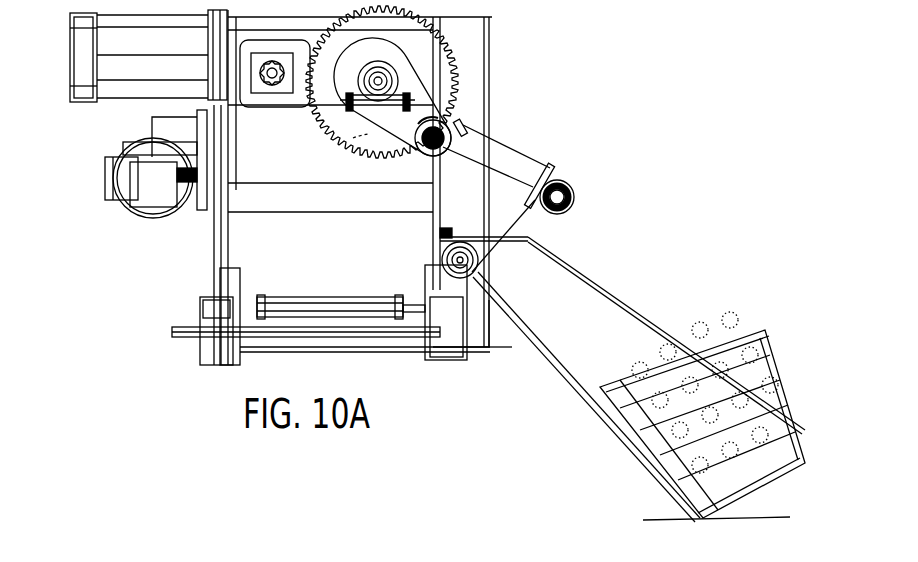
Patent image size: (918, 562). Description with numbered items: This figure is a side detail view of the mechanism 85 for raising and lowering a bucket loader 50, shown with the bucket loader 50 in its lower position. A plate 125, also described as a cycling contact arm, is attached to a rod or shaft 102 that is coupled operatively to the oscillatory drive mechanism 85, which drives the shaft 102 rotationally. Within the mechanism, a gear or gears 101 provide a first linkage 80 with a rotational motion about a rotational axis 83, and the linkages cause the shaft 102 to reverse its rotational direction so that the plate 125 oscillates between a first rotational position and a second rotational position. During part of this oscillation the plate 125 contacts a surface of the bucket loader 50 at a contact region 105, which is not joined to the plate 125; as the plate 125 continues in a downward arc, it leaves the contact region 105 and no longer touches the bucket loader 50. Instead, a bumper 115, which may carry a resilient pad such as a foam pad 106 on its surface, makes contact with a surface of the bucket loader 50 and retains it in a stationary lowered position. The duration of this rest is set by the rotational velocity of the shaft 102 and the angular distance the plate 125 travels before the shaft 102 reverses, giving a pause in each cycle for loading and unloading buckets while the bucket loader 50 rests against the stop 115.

The bucket loader 50 is at (650, 280).
The first linkage 80 is at (437, 102).
The rotational axis 83 is at (380, 81).
The mechanism for raising and lowering a bucket loader 85 is at (540, 47).
The gear 101 is at (388, 20).
The shaft 102 is at (443, 258).
The contact region 105 is at (500, 293).
The foam pad 106 is at (522, 333).
The bumper 115 is at (513, 335).
The plate 125 is at (483, 294).